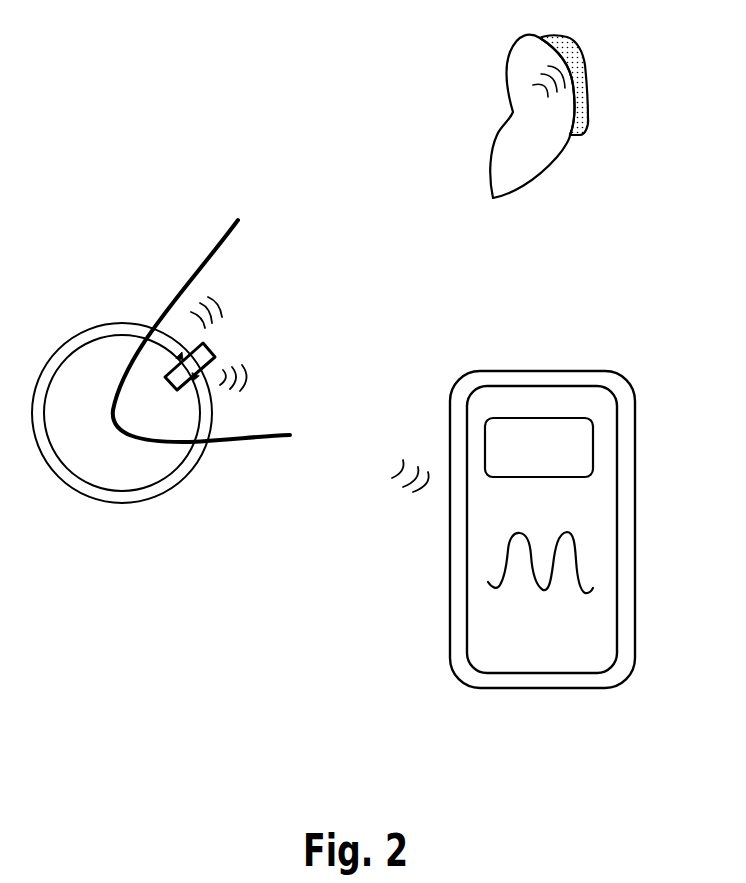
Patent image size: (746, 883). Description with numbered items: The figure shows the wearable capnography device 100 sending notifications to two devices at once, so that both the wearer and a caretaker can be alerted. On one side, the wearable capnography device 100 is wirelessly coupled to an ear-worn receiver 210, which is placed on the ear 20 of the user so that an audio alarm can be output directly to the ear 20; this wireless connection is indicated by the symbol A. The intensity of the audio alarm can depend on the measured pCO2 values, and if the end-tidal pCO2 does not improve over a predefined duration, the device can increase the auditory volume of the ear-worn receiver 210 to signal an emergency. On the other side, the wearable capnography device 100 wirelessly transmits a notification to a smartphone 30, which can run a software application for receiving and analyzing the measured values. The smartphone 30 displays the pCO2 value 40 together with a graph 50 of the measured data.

The wearable capnography device 100 is at (82, 248).
The symbol for wireless connection A is at (236, 301).
The ear 20 is at (497, 133).
The ear-worn receiver 210 is at (583, 67).
The smartphone 30 is at (635, 427).
The pCO2 value 40 is at (567, 418).
The graph 50 is at (503, 565).